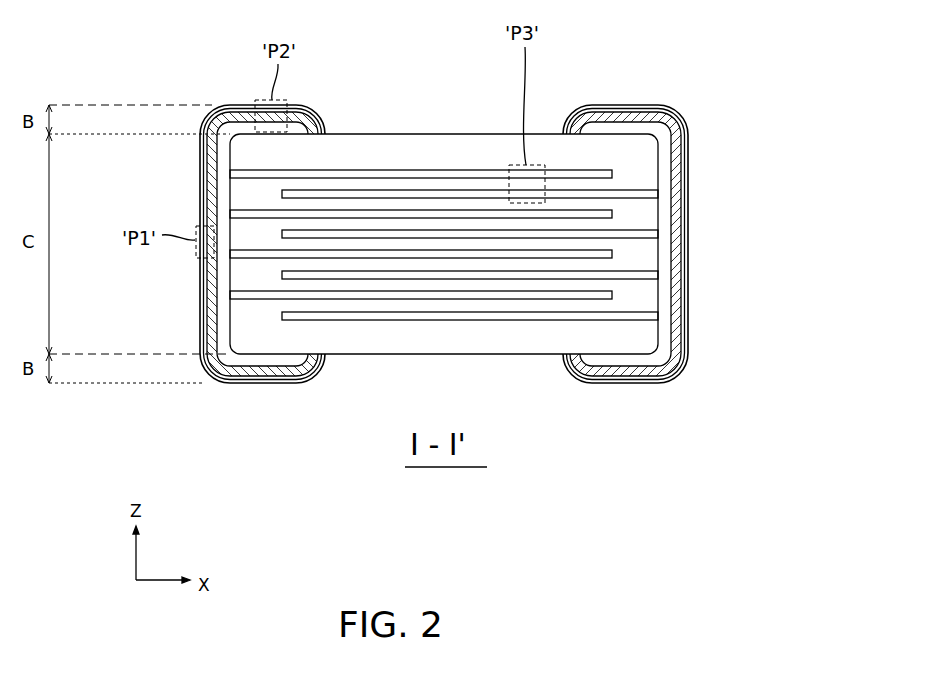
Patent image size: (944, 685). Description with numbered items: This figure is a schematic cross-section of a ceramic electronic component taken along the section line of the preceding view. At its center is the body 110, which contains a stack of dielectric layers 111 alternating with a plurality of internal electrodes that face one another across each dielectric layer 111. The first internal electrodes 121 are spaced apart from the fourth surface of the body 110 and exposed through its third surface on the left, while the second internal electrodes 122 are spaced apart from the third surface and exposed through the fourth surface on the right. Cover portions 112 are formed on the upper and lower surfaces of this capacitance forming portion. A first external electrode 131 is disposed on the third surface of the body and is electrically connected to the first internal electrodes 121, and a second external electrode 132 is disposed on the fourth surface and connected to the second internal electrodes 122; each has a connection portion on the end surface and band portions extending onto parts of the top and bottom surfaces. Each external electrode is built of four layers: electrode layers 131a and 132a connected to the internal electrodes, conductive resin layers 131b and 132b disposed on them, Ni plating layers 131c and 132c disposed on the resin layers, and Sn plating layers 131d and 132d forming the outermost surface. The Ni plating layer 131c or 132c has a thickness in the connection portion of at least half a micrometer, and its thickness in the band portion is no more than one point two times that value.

The body 110 is at (387, 134).
The dielectric layer 111 is at (337, 210).
The cover portion 112 is at (432, 148).
The first internal electrode 121 is at (487, 175).
The second internal electrode 122 is at (560, 198).
The first external electrode 131 is at (197, 244).
The electrode layer 131a is at (200, 263).
The conductive resin layer 131b is at (200, 287).
The Ni plating layer 131c is at (200, 313).
The Sn plating layer 131d is at (200, 337).
The second external electrode 132 is at (693, 244).
The electrode layer 132a is at (688, 232).
The conductive resin layer 132b is at (688, 257).
The Ni plating layer 132c is at (688, 283).
The Sn plating layer 132d is at (688, 310).